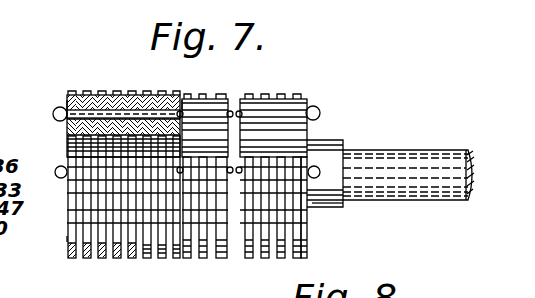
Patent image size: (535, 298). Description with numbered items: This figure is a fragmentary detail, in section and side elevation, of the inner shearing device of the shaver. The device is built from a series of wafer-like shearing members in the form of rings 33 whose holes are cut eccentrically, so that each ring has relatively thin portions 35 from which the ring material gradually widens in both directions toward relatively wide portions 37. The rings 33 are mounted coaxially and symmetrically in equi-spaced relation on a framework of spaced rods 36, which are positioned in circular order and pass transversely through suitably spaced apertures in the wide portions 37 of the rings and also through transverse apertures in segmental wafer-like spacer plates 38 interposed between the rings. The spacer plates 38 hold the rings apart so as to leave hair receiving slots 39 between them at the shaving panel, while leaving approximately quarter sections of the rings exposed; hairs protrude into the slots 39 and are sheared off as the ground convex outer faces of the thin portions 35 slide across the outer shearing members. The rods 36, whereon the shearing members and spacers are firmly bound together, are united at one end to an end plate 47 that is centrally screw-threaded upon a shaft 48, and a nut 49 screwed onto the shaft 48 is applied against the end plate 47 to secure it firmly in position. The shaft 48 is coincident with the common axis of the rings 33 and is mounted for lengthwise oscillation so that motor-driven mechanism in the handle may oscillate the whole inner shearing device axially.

The rings 33 is at (66, 239).
The relatively thin portions 35 is at (96, 259).
The spaced rods 36 is at (57, 168).
The relatively wide portions 37 is at (66, 100).
The segmental spacer plates 38 is at (140, 93).
The hair receiving slots 39 is at (138, 259).
The end plate 47 is at (308, 136).
The shaft 48 is at (455, 141).
The nut 49 is at (333, 203).